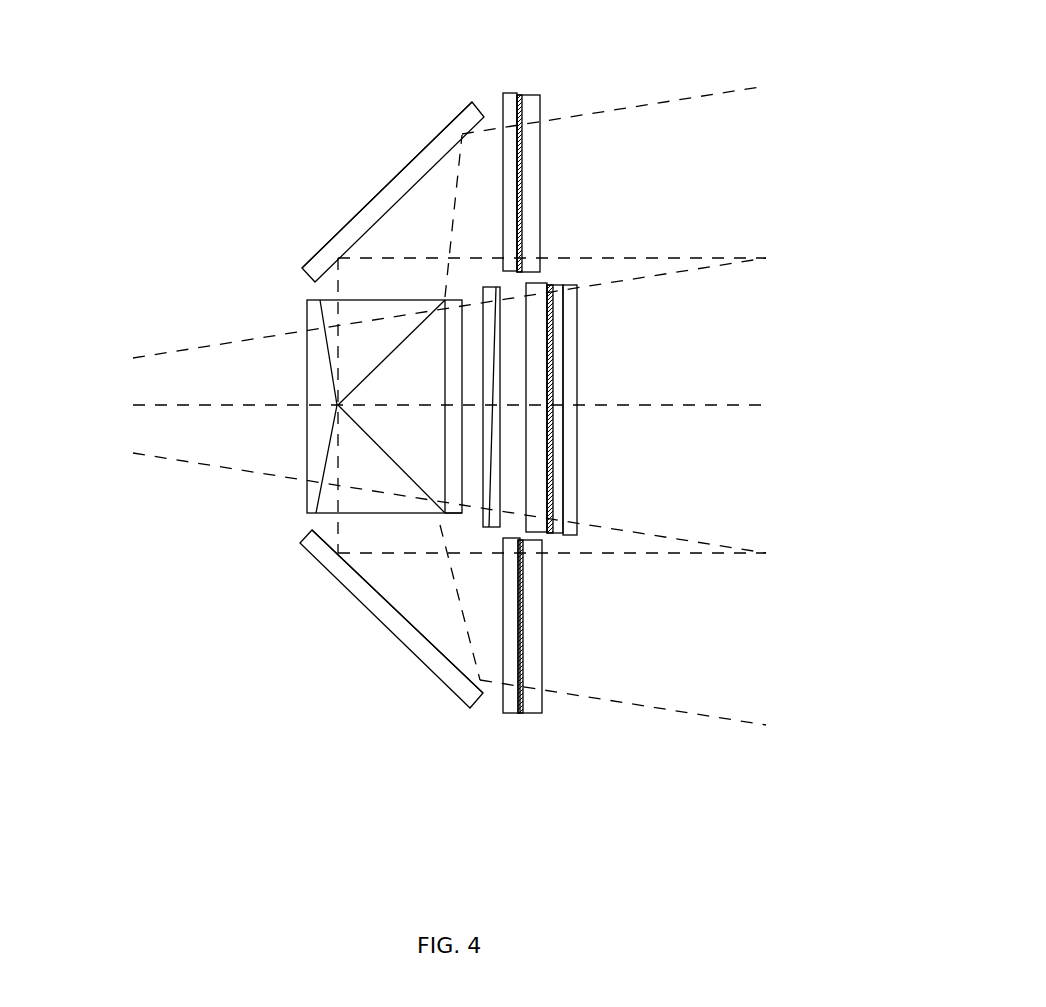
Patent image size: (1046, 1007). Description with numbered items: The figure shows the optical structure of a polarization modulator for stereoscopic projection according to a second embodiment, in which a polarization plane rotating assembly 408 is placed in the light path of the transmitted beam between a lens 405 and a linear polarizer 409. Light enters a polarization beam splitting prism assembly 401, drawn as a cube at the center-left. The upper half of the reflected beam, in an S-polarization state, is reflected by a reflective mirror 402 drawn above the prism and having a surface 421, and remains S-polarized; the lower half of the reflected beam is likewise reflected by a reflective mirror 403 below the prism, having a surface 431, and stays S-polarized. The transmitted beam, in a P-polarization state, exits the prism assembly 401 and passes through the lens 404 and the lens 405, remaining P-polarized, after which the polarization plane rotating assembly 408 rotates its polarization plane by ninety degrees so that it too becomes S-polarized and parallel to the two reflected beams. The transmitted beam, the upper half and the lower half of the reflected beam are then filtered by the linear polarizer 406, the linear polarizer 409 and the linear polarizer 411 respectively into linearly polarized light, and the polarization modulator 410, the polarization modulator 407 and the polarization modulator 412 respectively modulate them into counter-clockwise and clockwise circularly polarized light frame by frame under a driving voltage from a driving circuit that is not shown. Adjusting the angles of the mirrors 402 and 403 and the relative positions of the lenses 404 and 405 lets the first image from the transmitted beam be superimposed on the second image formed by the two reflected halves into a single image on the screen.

The polarization beam splitting prism assembly 401 is at (320, 380).
The reflective mirror 402 is at (368, 203).
The reflective surface of upper reflector 421 is at (407, 197).
The reflective mirror 403 is at (368, 610).
The reflective surface of lower reflector 431 is at (385, 592).
The lens 404 is at (455, 510).
The lens 405 is at (503, 500).
The linear polarizer 406 is at (510, 80).
The polarization modulator 407 is at (532, 93).
The polarization plane rotating assembly 408 is at (522, 288).
The linear polarizer 409 is at (553, 283).
The polarization modulator 410 is at (577, 390).
The linear polarizer 411 is at (513, 727).
The polarization modulator 412 is at (532, 727).